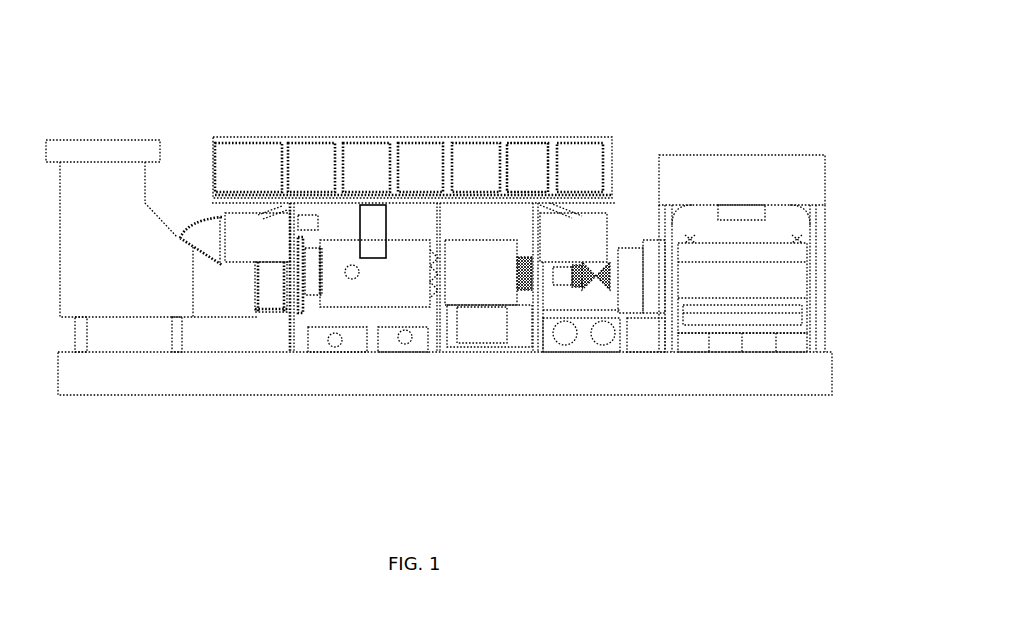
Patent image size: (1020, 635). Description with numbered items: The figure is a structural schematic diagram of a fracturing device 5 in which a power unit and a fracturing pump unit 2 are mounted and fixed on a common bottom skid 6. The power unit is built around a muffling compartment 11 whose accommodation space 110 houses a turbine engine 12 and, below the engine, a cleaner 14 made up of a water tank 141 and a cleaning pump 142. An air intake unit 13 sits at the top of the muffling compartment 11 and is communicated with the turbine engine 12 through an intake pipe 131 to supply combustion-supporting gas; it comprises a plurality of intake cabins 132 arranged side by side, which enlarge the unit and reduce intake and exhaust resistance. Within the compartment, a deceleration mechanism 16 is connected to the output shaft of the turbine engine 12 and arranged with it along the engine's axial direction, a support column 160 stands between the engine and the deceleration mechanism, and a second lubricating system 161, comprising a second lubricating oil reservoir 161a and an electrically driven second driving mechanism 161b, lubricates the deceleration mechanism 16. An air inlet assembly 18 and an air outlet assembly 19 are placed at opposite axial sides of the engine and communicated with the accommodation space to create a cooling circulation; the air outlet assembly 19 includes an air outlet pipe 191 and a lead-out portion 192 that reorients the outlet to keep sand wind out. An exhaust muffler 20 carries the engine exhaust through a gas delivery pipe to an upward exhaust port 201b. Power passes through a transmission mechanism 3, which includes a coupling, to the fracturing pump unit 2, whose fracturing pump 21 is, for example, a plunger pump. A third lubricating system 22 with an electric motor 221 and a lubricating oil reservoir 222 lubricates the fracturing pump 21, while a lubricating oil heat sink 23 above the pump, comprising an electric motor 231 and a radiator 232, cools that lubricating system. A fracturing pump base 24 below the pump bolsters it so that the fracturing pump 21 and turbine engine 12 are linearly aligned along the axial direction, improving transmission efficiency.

The fracturing device 5 is at (444, 55).
The bottom skid 6 is at (95, 372).
The exhaust port 201b is at (88, 138).
The exhaust muffler 20 is at (152, 305).
The air outlet assembly 19 is at (236, 150).
The lead-out portion 192 is at (207, 217).
The air outlet pipe 191 is at (252, 235).
The air intake unit 13 is at (412, 158).
The intake pipe 131 is at (385, 226).
The intake cabins 132 is at (517, 147).
The accommodation space 110 is at (393, 231).
The muffling compartment 11 is at (293, 320).
The cleaner 14 is at (305, 370).
The water tank 141 is at (312, 347).
The cleaning pump 142 is at (335, 343).
The turbine engine 12 is at (372, 278).
The second lubricating system 161 is at (398, 417).
The second lubricating oil reservoir 161a is at (385, 337).
The second driving mechanism 161b is at (410, 343).
The support column 160 is at (438, 228).
The deceleration mechanism 16 is at (483, 297).
The fracturing pump 21 is at (530, 273).
The air inlet assembly 18 is at (572, 233).
The transmission mechanism 3 is at (558, 287).
The third lubricating system 22 is at (604, 377).
The electric motor 221 is at (570, 338).
The lubricating oil reservoir 222 is at (621, 326).
The fracturing pump unit 2 is at (826, 257).
The lubricating oil heat sink 23 is at (734, 127).
The radiator 232 is at (672, 183).
The electric motor 231 is at (747, 212).
The fracturing pump base 24 is at (748, 340).